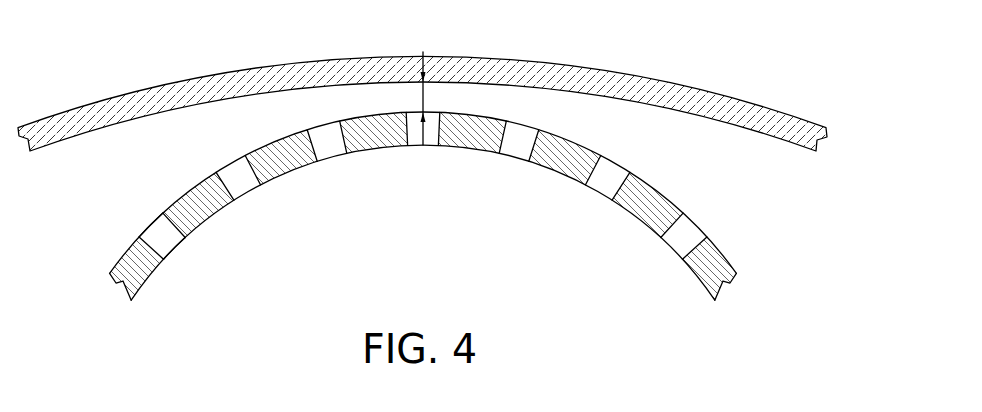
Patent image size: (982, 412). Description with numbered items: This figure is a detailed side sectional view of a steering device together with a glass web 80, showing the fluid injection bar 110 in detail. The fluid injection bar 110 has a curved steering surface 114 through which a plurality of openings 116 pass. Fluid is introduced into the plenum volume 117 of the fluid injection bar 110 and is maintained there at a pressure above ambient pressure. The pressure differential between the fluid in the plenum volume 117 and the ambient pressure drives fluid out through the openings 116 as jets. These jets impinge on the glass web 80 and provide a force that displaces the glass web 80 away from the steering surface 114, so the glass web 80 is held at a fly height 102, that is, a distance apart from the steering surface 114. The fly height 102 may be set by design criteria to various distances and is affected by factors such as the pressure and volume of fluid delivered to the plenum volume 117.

The glass web 80 is at (708, 91).
The steering surface 114 is at (720, 253).
The openings 116 is at (168, 243).
The plenum volume 117 is at (440, 256).
The fly height 102 is at (421, 98).
The fluid injection bar 110 is at (784, 310).